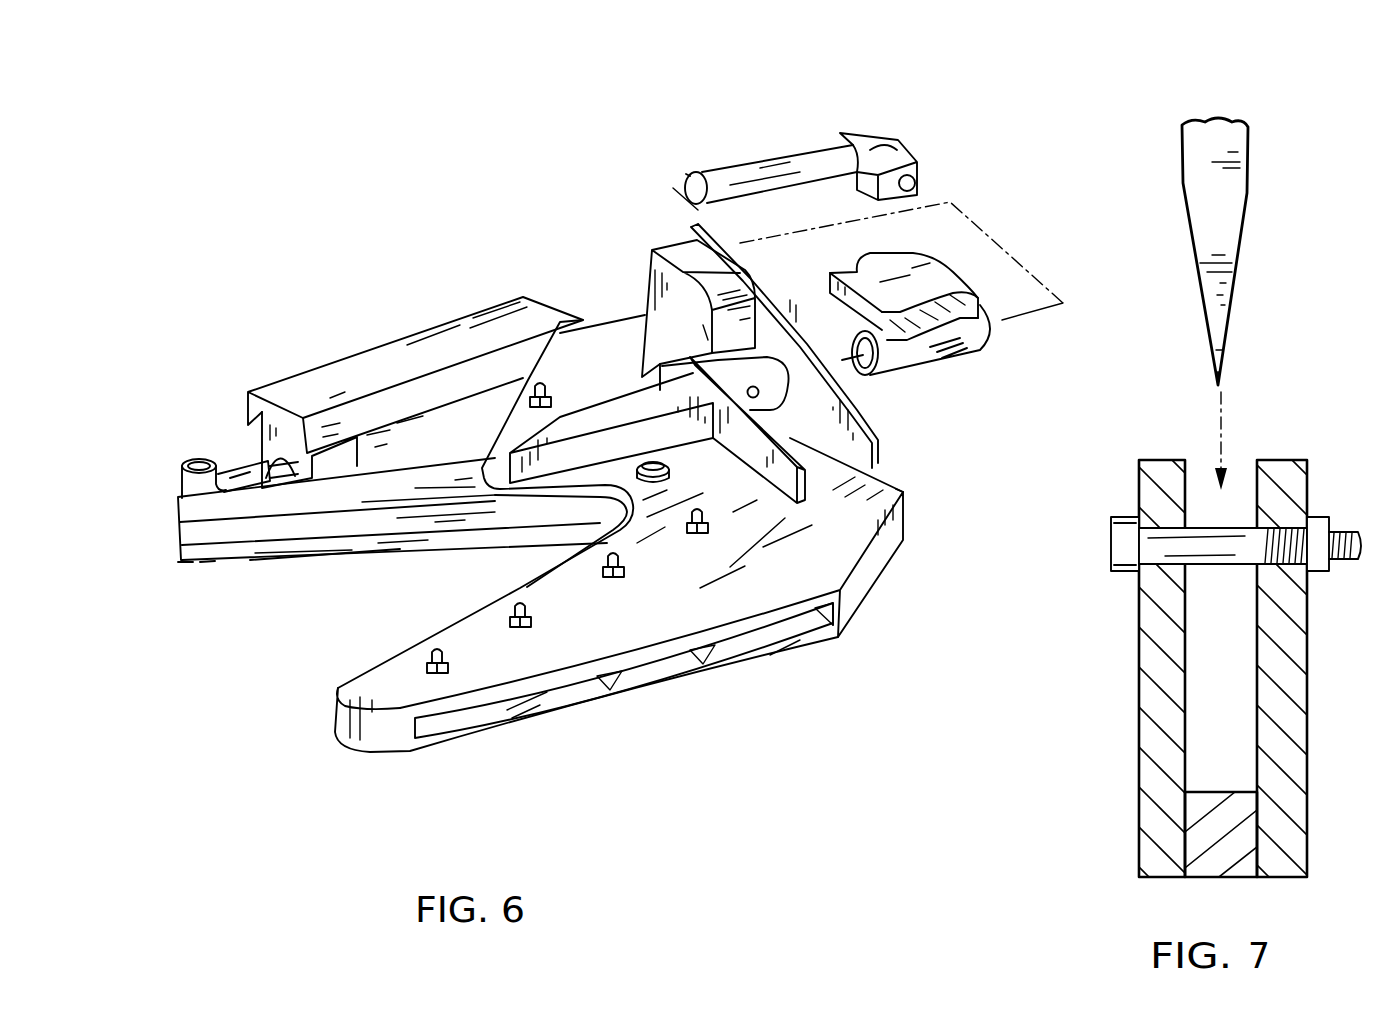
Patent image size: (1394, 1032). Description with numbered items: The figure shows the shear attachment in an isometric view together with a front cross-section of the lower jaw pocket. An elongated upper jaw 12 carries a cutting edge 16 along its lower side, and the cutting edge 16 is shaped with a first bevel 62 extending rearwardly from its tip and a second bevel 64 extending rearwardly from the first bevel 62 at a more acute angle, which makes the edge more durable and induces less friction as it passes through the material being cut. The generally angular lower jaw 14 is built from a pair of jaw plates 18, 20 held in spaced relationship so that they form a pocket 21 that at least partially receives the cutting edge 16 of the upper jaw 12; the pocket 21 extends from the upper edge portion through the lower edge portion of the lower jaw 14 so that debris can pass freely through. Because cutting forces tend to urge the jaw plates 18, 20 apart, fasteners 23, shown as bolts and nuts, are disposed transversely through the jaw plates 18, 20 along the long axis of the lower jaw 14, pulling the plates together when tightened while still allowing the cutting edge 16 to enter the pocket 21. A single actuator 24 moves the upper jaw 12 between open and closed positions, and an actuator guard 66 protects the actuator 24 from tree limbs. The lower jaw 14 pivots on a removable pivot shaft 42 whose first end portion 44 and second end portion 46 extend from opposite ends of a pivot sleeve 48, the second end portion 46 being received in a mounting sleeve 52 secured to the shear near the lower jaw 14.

In FIG. 6, the upper jaw 12 is at (172, 490).
In FIG. 7, the upper jaw 12 is at (1190, 170).
In FIG. 6, the lower jaw 14 is at (695, 607).
In FIG. 7, the lower jaw 14 is at (1180, 668).
In FIG. 6, the cutting edge 16 is at (252, 577).
In FIG. 7, the cutting edge 16 is at (1220, 352).
In FIG. 7, the jaw plate 18 is at (1149, 730).
In FIG. 7, the jaw plate 20 is at (1282, 709).
In FIG. 6, the pocket 21 is at (555, 716).
In FIG. 7, the pocket 21 is at (1238, 658).
In FIG. 6, the fasteners 23 is at (432, 660).
In FIG. 7, the fasteners 23 is at (1118, 542).
In FIG. 6, the actuator 24 is at (460, 418).
In FIG. 6, the pivot shaft 42 is at (772, 165).
In FIG. 6, the first end portion 44 is at (858, 142).
In FIG. 6, the second end portion 46 is at (682, 170).
In FIG. 6, the pivot sleeve 48 is at (943, 343).
In FIG. 6, the mounting sleeve 52 is at (910, 493).
In FIG. 6, the first bevel 62 is at (203, 573).
In FIG. 6, the second bevel 64 is at (178, 553).
In FIG. 6, the actuator guard 66 is at (392, 368).